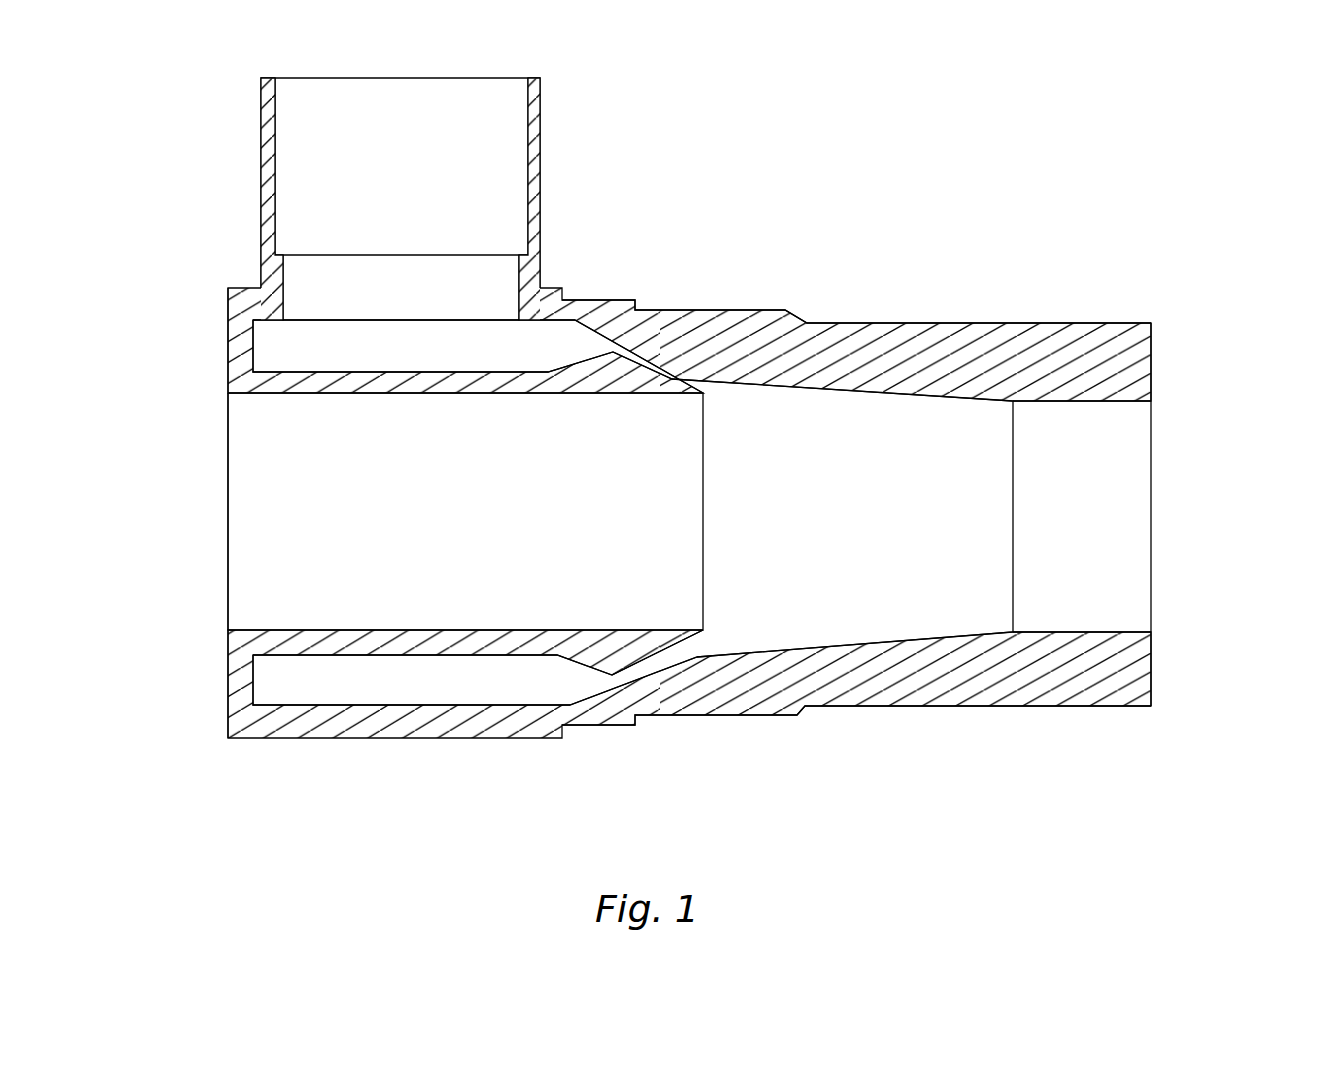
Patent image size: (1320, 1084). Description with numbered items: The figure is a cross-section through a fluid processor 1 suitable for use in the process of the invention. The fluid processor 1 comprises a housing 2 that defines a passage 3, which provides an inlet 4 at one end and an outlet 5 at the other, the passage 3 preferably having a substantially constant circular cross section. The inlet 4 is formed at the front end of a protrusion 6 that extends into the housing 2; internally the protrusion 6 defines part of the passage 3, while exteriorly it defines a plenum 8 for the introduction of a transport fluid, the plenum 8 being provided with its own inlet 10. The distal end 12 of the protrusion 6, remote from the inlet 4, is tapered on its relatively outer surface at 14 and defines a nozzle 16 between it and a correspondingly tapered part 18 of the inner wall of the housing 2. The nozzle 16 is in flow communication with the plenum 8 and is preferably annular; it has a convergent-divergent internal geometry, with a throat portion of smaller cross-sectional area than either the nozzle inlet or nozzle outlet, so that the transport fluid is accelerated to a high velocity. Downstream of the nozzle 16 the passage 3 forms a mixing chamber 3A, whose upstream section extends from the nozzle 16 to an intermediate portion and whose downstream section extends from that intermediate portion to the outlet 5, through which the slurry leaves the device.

The fluid processor 1 is at (965, 300).
The housing 2 is at (1081, 323).
The passage 3 is at (320, 556).
The mixing chamber 3A is at (835, 531).
The inlet 4 is at (228, 442).
The outlet 5 is at (1151, 448).
The protrusion 6 is at (358, 643).
The plenum 8 is at (395, 696).
The inlet 10 is at (542, 137).
The distal end 12 is at (633, 648).
The tapered outer surface 14 is at (660, 372).
The nozzle 16 is at (697, 632).
The tapered part of the inner wall 18 is at (640, 350).